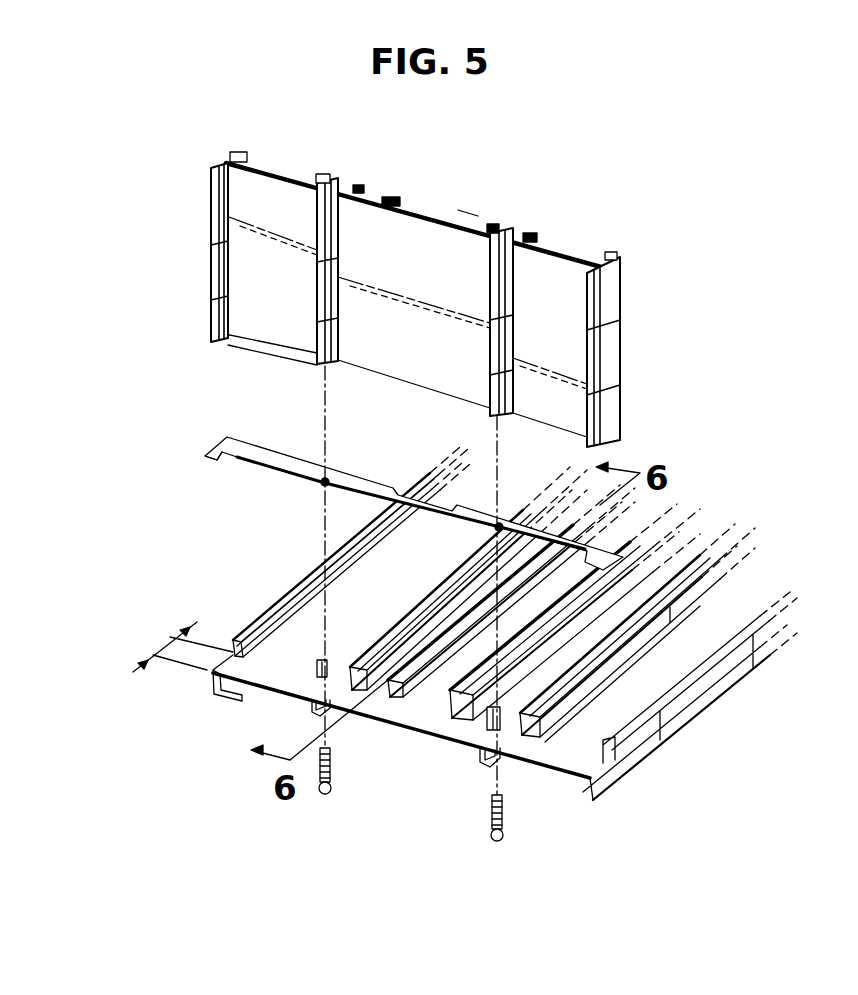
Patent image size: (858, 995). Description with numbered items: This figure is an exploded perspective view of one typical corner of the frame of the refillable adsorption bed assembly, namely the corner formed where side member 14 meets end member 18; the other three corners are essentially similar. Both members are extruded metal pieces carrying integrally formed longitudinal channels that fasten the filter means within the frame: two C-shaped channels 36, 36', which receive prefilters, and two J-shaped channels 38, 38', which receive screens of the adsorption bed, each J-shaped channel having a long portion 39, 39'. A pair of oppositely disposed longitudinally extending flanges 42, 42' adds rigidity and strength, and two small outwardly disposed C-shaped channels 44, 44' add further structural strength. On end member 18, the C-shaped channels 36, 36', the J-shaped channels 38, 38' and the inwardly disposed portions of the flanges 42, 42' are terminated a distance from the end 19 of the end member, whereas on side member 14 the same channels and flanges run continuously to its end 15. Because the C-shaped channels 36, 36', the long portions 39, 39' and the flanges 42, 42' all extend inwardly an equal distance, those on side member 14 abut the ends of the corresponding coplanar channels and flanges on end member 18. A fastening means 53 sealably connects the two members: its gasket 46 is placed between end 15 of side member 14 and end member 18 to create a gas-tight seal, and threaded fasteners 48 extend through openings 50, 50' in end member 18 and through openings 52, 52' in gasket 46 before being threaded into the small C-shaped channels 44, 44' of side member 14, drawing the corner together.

The side member 14 is at (213, 245).
The end of side member 15 is at (283, 348).
The flange 42' is at (332, 372).
The C-shaped channel 36' is at (415, 402).
The J-shaped channel 38' is at (508, 465).
The long portion of J-shaped channel 39' is at (417, 171).
The long portion of J-shaped channel 39 is at (471, 194).
The J-shaped channel 38 is at (564, 498).
The C-shaped channel 36 is at (655, 468).
The flange 42 is at (695, 507).
The small C-shaped channel 44' is at (310, 545).
The small C-shaped channel 44 is at (506, 627).
The fastening means 53 is at (186, 439).
The gasket 46 is at (215, 460).
The opening in gasket 52' is at (287, 506).
The opening in gasket 52 is at (446, 547).
The opening in end member 50' is at (357, 740).
The opening in end member 50 is at (521, 779).
The threaded fastener 48 is at (330, 788).
The end member 18 is at (648, 762).
The end of end member 19 is at (563, 775).